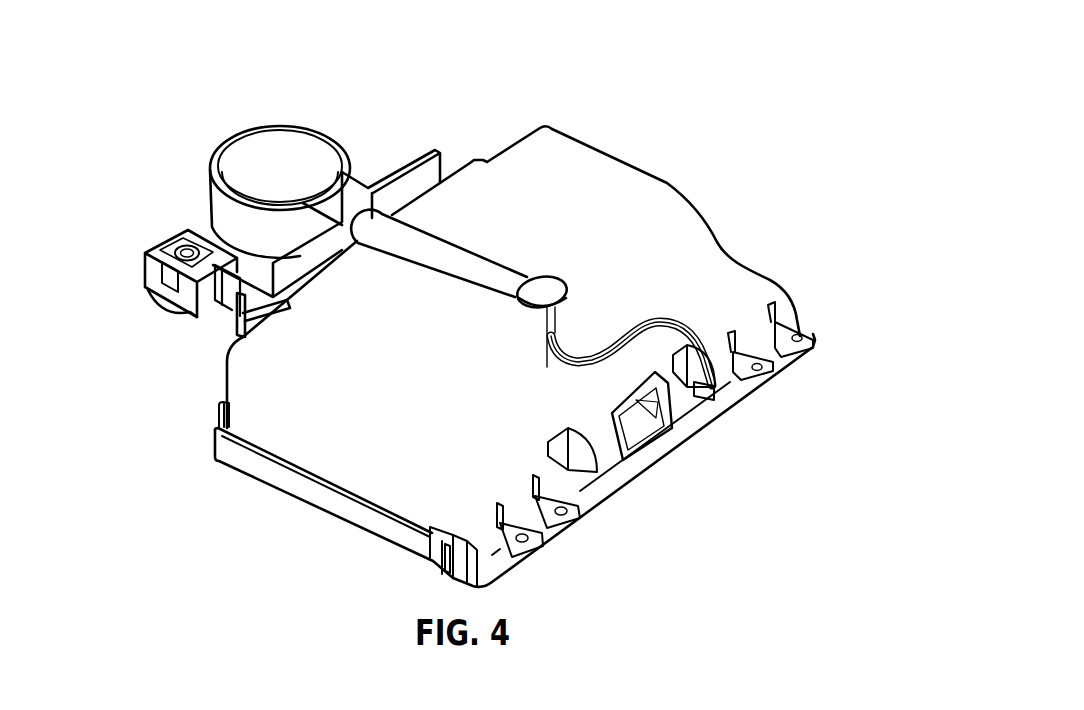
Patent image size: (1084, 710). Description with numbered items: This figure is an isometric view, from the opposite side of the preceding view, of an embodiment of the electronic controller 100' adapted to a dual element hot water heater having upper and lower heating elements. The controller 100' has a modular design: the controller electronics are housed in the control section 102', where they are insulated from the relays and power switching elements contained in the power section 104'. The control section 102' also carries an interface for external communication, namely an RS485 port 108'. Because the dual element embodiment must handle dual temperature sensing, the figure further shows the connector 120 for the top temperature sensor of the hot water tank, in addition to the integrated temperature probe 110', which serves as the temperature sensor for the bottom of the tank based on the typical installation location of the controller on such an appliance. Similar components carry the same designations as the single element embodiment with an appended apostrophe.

The electronic controller 100' is at (488, 300).
The control section 102' is at (513, 251).
The power section 104' is at (264, 231).
The RS485 port 108' is at (695, 432).
The integrated temperature probe 110' is at (460, 207).
The connector 120 is at (608, 509).